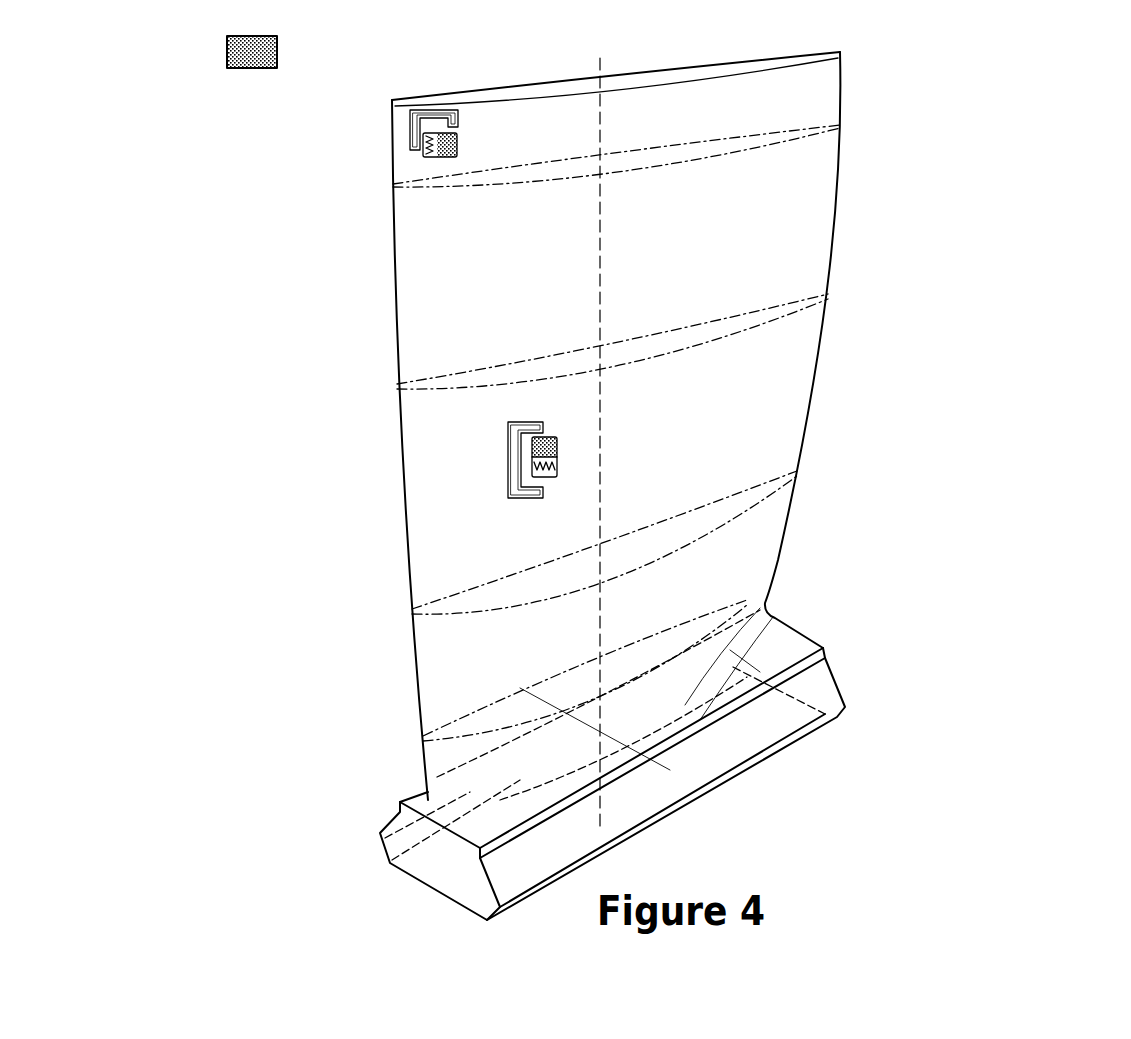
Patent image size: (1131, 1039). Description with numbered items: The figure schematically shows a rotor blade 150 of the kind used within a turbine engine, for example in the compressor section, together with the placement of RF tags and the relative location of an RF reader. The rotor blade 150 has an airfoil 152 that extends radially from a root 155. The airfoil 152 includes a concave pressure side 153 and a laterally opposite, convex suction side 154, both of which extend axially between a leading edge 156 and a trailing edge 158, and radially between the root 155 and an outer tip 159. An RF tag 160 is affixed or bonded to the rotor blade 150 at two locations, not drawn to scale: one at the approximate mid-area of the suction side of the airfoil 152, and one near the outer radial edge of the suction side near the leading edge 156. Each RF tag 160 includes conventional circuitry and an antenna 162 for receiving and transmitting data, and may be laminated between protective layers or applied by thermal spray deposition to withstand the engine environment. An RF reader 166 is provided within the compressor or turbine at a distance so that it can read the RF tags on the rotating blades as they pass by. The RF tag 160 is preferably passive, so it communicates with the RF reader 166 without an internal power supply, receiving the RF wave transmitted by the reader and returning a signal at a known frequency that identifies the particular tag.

The rotor blade 150 is at (259, 461).
The airfoil 152 is at (913, 256).
The pressure side 153 is at (670, 332).
The suction side 154 is at (633, 357).
The root 155 is at (807, 783).
The leading edge 156 is at (400, 519).
The trailing edge 158 is at (815, 398).
The outer tip 159 is at (637, 75).
The RF tag 160 is at (458, 137).
The antenna 162 is at (435, 110).
The RF reader 166 is at (240, 45).